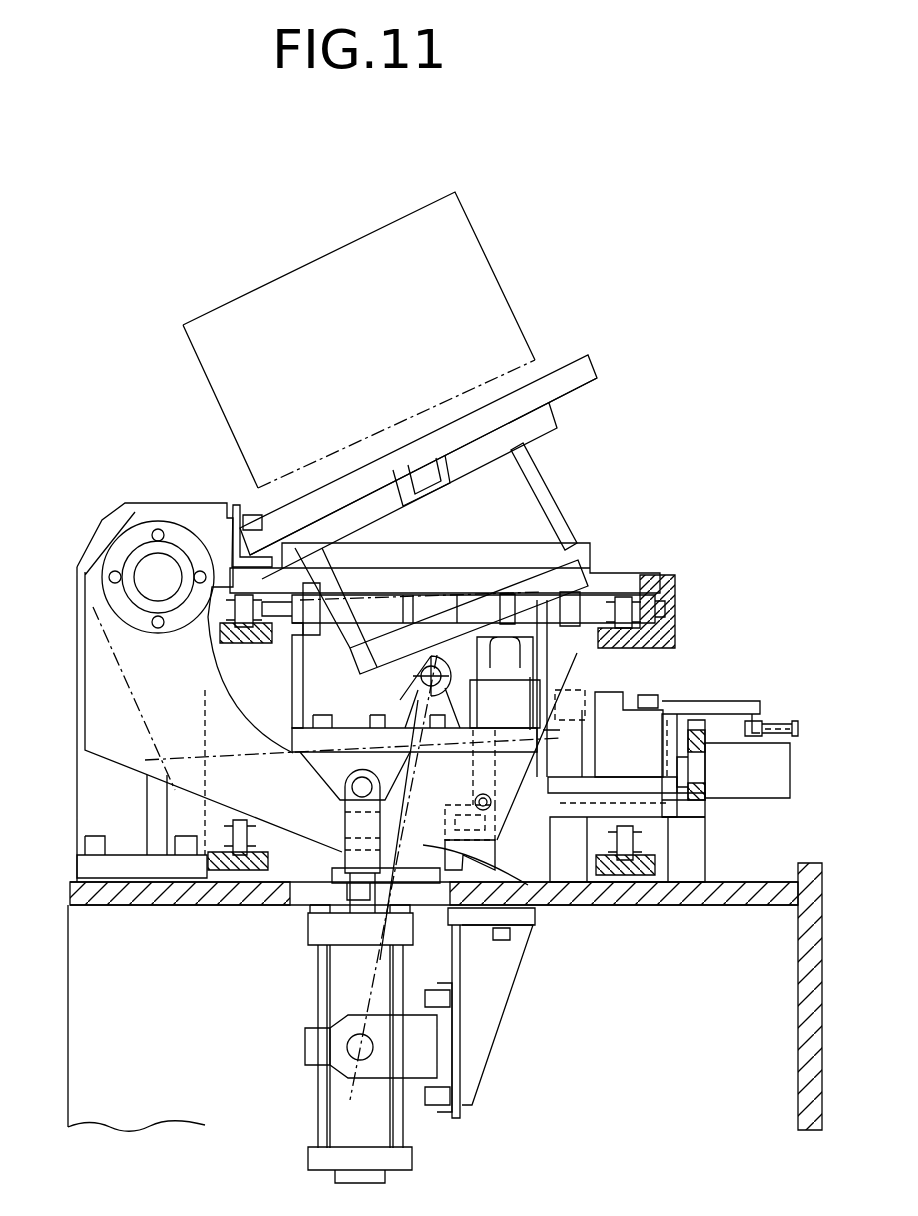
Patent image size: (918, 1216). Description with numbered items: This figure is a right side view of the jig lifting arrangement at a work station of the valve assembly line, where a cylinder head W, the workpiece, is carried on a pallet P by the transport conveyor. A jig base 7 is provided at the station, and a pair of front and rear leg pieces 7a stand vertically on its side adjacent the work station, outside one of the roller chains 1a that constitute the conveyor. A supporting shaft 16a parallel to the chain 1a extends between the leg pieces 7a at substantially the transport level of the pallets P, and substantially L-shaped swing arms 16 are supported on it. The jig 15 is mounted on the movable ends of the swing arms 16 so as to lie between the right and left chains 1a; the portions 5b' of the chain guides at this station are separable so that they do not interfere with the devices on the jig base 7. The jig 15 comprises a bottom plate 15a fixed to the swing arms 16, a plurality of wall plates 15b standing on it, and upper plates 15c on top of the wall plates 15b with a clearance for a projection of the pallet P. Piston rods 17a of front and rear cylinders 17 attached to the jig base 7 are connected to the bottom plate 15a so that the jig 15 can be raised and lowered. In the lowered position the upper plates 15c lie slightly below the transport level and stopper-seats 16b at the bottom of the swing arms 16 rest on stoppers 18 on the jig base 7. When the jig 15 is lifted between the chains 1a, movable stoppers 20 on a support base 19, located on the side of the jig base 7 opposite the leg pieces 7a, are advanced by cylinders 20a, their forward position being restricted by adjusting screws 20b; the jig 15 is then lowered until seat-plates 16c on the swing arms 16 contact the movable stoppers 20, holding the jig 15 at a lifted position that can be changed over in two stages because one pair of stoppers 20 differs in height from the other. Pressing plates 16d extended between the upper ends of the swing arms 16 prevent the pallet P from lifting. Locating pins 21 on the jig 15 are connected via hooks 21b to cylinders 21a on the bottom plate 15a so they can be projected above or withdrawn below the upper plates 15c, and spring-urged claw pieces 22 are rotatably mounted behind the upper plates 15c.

The cylinder head W is at (516, 346).
The pallet P is at (588, 362).
The pressing plates 16d is at (258, 530).
The swing arms 16 is at (140, 680).
The supporting shaft 16a is at (152, 565).
The leg pieces 7a is at (88, 770).
The jig 15 is at (484, 592).
The upper plates 15c is at (382, 608).
The claw pieces 22 is at (540, 600).
The roller chains 1a is at (655, 613).
The portions of the chain guides 5b' is at (452, 804).
The jig base 7 is at (702, 898).
The support base 19 is at (690, 855).
The movable stoppers 20 is at (598, 712).
The adjusting screws 20b is at (778, 722).
The cylinders 20a is at (775, 788).
The seat-plates 16c is at (560, 660).
The locating pins 21 is at (510, 638).
The hooks 21b is at (466, 702).
The cylinders 21a is at (497, 812).
The bottom plate 15a is at (298, 741).
The wall plates 15b is at (337, 770).
The piston rods 17a is at (362, 879).
The stoppers 18 is at (404, 895).
The cylinders 17 is at (382, 1118).
The stopper-seats 16b is at (457, 912).